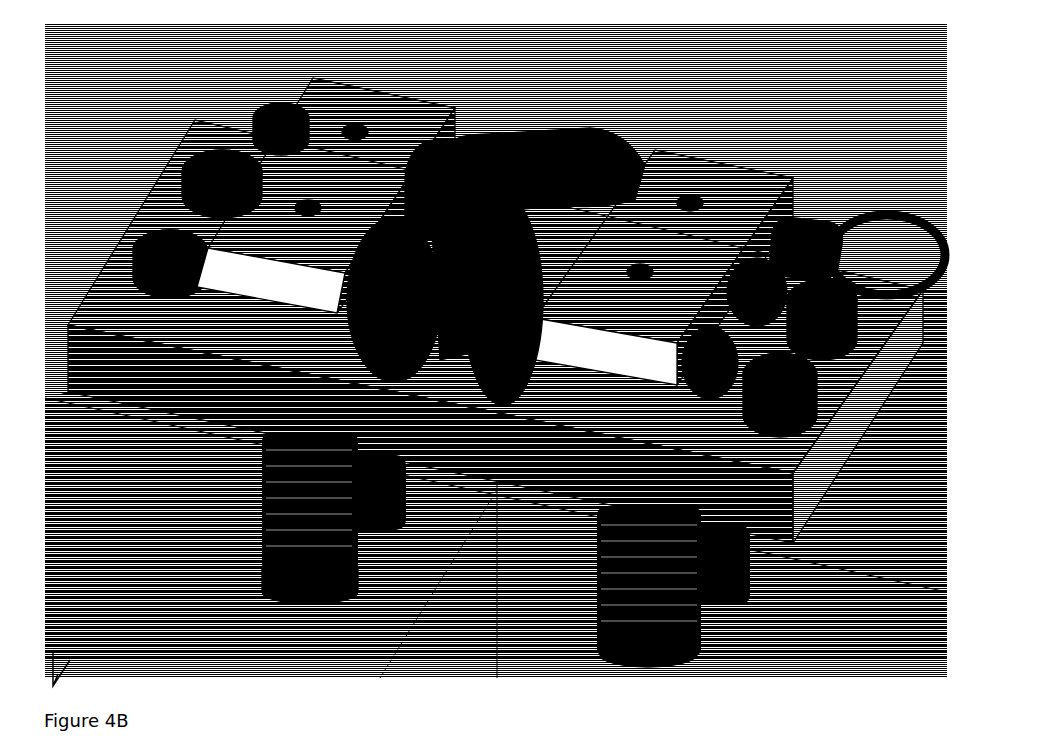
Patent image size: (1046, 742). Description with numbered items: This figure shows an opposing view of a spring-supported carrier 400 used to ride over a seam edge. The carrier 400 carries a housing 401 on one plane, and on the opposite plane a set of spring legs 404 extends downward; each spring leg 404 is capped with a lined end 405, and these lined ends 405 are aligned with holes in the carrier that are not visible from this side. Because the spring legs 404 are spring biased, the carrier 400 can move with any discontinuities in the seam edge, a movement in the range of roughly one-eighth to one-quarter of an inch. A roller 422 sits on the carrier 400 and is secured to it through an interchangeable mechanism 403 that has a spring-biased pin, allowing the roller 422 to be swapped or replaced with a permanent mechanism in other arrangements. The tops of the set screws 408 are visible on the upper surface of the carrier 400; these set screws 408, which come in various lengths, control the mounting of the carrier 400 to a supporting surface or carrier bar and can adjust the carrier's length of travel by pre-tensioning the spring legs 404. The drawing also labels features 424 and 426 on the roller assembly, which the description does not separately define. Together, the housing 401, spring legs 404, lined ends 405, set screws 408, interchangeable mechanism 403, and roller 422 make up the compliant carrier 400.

The carrier 400 is at (90, 170).
The housing 401 is at (340, 107).
The interchangeable mechanism 403 is at (823, 217).
The spring legs 404 is at (273, 506).
The lined ends 405 is at (270, 593).
The set screws 408 is at (817, 397).
The roller 422 is at (598, 160).
The clamp body 424 is at (585, 238).
The clamp pad 426 is at (537, 390).